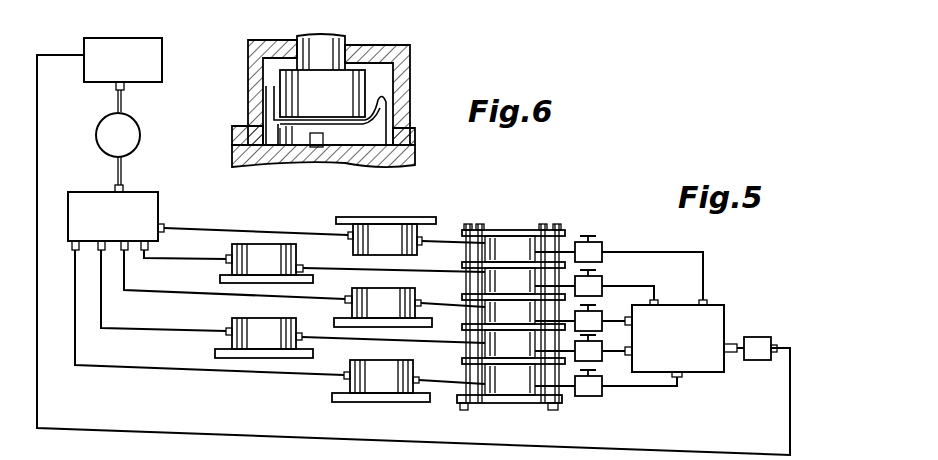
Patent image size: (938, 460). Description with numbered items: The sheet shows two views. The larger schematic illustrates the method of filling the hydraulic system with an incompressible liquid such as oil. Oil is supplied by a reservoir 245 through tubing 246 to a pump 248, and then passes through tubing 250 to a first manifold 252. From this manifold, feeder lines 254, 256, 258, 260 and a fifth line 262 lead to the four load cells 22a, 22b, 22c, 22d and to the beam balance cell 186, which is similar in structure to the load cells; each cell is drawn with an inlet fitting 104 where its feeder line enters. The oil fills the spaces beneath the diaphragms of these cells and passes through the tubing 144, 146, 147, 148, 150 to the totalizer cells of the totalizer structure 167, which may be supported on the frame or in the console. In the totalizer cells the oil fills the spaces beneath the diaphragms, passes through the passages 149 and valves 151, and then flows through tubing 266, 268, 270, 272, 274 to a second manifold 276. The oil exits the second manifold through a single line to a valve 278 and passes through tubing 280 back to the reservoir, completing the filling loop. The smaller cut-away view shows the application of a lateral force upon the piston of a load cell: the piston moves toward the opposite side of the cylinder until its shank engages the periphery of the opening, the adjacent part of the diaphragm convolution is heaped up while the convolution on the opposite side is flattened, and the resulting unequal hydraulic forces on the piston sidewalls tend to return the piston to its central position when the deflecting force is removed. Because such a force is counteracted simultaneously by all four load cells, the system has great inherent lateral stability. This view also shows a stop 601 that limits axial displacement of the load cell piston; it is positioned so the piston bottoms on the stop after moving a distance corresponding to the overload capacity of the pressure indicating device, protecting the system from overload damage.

In FIG. 6, the stop 601 is at (323, 140).
In FIG. 5, the reservoir 245 is at (138, 46).
In FIG. 5, the tubing 246 is at (122, 103).
In FIG. 5, the pump 248 is at (140, 137).
In FIG. 5, the tubing 250 is at (122, 172).
In FIG. 5, the first manifold 252 is at (120, 223).
In FIG. 5, the feeder line 254 is at (75, 347).
In FIG. 5, the feeder line 256 is at (101, 310).
In FIG. 5, the feeder line 258 is at (124, 278).
In FIG. 5, the feeder line 260 is at (178, 258).
In FIG. 5, the conduit 262 is at (197, 228).
In FIG. 5, the load cell 22a is at (350, 386).
In FIG. 5, the load cell 22b is at (232, 342).
In FIG. 5, the load cell 22c is at (352, 312).
In FIG. 5, the load cell 22d is at (258, 250).
In FIG. 5, the inlet fitting 104 is at (226, 259).
In FIG. 5, the beam balance cell 186 is at (412, 210).
In FIG. 5, the tubing 144 is at (440, 381).
In FIG. 5, the tubing 146 is at (400, 340).
In FIG. 5, the tubing 147 is at (385, 270).
In FIG. 5, the tubing 148 is at (458, 305).
In FIG. 5, the tubing 150 is at (441, 244).
In FIG. 5, the totalizer structure 167 is at (535, 226).
In FIG. 5, the passages 149 is at (575, 390).
In FIG. 5, the valves 151 is at (568, 316).
In FIG. 5, the tubing 266 is at (640, 388).
In FIG. 5, the tubing 268 is at (617, 353).
In FIG. 5, the tubing 270 is at (618, 323).
In FIG. 5, the tubing 272 is at (628, 288).
In FIG. 5, the tubing 274 is at (640, 254).
In FIG. 5, the second manifold 276 is at (688, 346).
In FIG. 5, the valve 278 is at (758, 337).
In FIG. 5, the tubing 280 is at (146, 431).